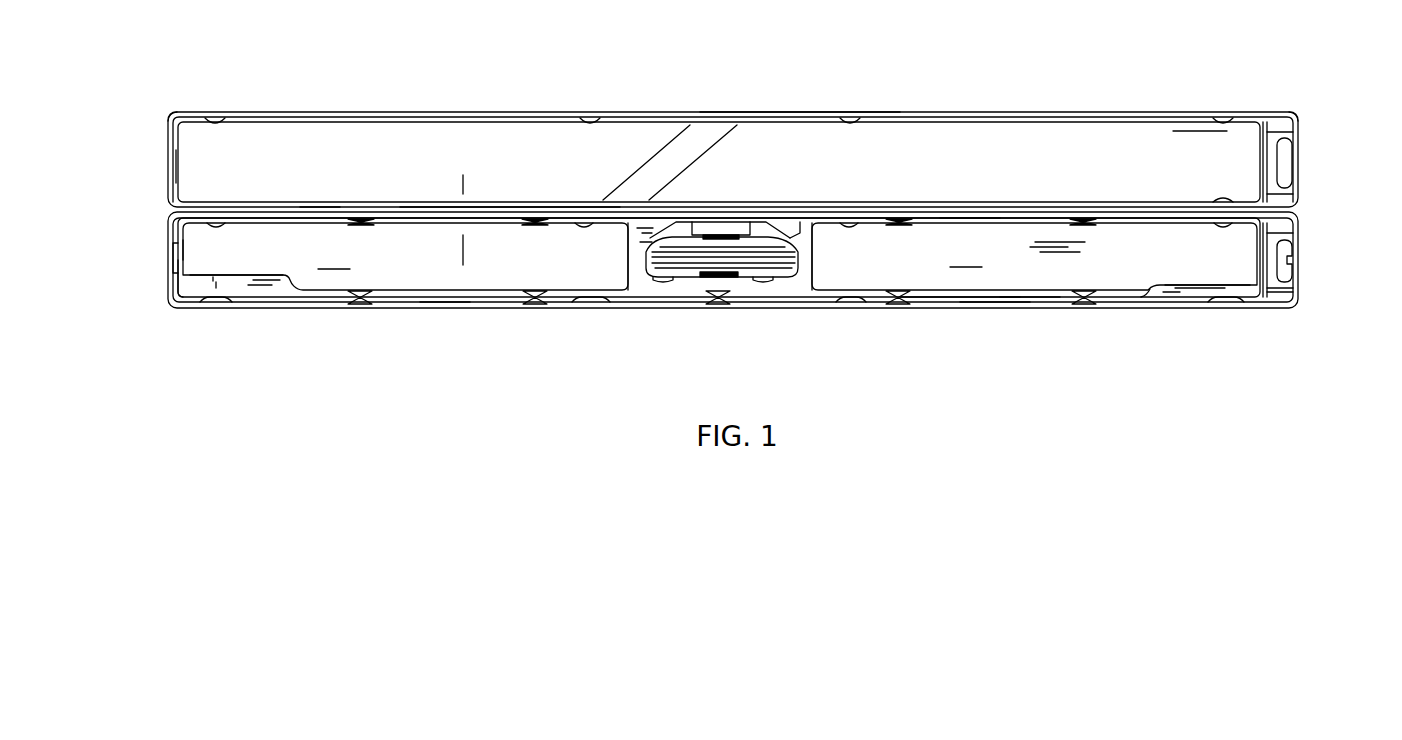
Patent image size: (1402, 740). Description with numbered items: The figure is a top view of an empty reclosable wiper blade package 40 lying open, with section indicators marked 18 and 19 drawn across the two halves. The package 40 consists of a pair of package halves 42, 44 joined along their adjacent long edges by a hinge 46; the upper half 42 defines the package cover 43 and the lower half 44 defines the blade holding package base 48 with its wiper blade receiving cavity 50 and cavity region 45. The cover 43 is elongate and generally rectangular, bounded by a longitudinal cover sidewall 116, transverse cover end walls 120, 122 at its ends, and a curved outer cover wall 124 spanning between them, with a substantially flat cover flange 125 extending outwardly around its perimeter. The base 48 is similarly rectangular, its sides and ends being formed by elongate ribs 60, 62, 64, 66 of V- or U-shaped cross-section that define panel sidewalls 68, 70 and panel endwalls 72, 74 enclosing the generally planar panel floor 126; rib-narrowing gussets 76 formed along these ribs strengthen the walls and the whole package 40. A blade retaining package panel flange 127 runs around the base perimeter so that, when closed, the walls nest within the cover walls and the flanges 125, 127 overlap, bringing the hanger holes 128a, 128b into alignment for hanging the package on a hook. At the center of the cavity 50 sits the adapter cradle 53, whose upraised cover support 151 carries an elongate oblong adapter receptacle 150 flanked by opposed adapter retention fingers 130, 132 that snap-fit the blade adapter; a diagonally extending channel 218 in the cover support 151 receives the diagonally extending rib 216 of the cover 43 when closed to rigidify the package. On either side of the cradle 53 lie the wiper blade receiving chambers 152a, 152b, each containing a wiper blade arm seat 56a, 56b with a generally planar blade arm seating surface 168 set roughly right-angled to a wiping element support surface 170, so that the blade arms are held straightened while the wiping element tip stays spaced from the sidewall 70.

The section line 18 is at (456, 248).
The section line 19 is at (456, 184).
The reclosable wiper blade package 40 is at (232, 345).
The package half 42 is at (181, 103).
The package cover 43 is at (1095, 110).
The package half 44 is at (1182, 341).
The lower housing cavity 45 is at (627, 324).
The hinge 46 is at (160, 207).
The blade holding package base 48 is at (993, 318).
The wiper blade receiving cavity 50 is at (332, 280).
The adapter cradle 53 is at (788, 284).
The wiper blade arm seat 56a is at (278, 256).
The wiper blade arm seat 56b is at (1147, 250).
The elongate rib 60 is at (971, 223).
The elongate rib 62 is at (1023, 298).
The elongate rib 64 is at (172, 243).
The elongate rib 66 is at (1273, 222).
The panel sidewall 68 is at (507, 212).
The panel sidewall 70 is at (447, 318).
The panel endwall 72 is at (1280, 291).
The panel endwall 74 is at (166, 276).
The rib-narrowing gusset 76 is at (358, 218).
The cover sidewall 116 is at (803, 125).
The cover end wall 120 is at (1256, 168).
The cover end wall 122 is at (186, 145).
The outer cover wall 124 is at (1026, 138).
The cover flange 125 is at (141, 118).
The panel floor 126 is at (651, 256).
The blade retaining package panel flange 127 is at (1295, 238).
The hanger hole 128a is at (1292, 263).
The hanger hole 128b is at (1295, 162).
The adapter retention finger 130 is at (717, 235).
The adapter retention finger 132 is at (734, 277).
The adapter receptacle 150 is at (676, 281).
The cover support 151 is at (799, 222).
The wiper blade receiving chamber 152a is at (506, 272).
The wiper blade receiving chamber 152b is at (1112, 275).
The blade arm seating surface 168 is at (242, 277).
The wiping element support surface 170 is at (282, 287).
The diagonally extending rib 216 is at (673, 158).
The diagonally extending channel 218 is at (630, 232).